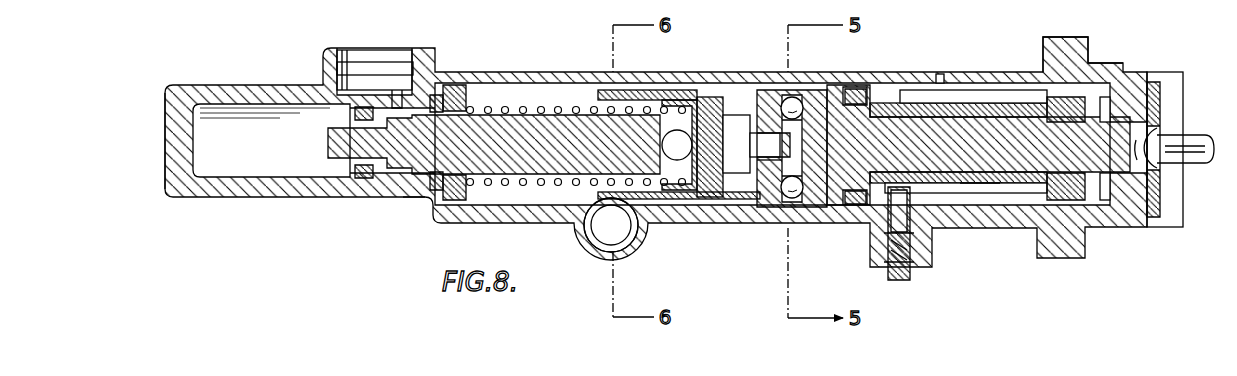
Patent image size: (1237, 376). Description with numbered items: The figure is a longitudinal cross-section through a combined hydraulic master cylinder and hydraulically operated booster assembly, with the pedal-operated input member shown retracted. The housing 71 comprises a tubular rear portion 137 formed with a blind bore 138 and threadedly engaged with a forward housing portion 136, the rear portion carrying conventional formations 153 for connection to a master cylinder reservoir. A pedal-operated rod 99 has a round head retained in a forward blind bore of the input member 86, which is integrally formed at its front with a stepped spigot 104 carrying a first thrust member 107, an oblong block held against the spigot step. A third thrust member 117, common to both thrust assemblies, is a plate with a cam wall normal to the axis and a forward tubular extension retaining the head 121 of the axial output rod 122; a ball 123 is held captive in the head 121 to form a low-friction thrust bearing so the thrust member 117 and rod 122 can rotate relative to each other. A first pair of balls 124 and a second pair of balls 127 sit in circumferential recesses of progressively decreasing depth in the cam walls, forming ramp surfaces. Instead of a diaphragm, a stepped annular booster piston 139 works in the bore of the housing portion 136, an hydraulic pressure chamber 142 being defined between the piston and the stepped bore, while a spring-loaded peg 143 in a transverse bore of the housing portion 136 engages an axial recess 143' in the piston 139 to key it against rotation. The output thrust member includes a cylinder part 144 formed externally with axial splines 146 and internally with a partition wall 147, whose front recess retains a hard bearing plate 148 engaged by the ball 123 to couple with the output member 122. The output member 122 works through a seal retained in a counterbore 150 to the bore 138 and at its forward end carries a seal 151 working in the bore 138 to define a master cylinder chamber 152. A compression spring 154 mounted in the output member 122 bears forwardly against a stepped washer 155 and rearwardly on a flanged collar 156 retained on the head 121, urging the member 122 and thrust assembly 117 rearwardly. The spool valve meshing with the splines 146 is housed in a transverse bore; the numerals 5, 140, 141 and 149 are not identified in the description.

The valve member 5 is at (767, 190).
The housing 71 is at (940, 83).
The input member 86 is at (1038, 160).
The pedal-operated rod 99 is at (1192, 150).
The stepped spigot 104 is at (850, 92).
The first thrust member 107 is at (817, 187).
The third thrust member 117 is at (738, 192).
The head 121 is at (628, 100).
The output rod 122 is at (543, 155).
The ball 123 is at (693, 104).
The first pair of balls 124 is at (796, 100).
The balls 127 is at (598, 230).
The housing portion 136 is at (1008, 90).
The tubular rear portion 137 is at (268, 188).
The blind bore 138 is at (228, 180).
The stepped annular booster piston 139 is at (962, 183).
The seal 140 is at (848, 205).
The seal 141 is at (1082, 200).
The hydraulic pressure chamber 142 is at (970, 97).
The spring-loaded peg 143 is at (919, 246).
The axial recess 143' is at (958, 224).
The part of output thrust member 144 is at (700, 180).
The splines 146 is at (617, 235).
The partition wall 147 is at (736, 113).
The hard bearing plate 148 is at (710, 120).
The shoulder 149 is at (428, 196).
The counterbore 150 is at (440, 88).
The seal 151 is at (358, 180).
The master cylinder chamber 152 is at (245, 130).
The formations 153 is at (372, 55).
The compression spring 154 is at (553, 105).
The stepped washer 155 is at (470, 98).
The flanged collar 156 is at (677, 130).